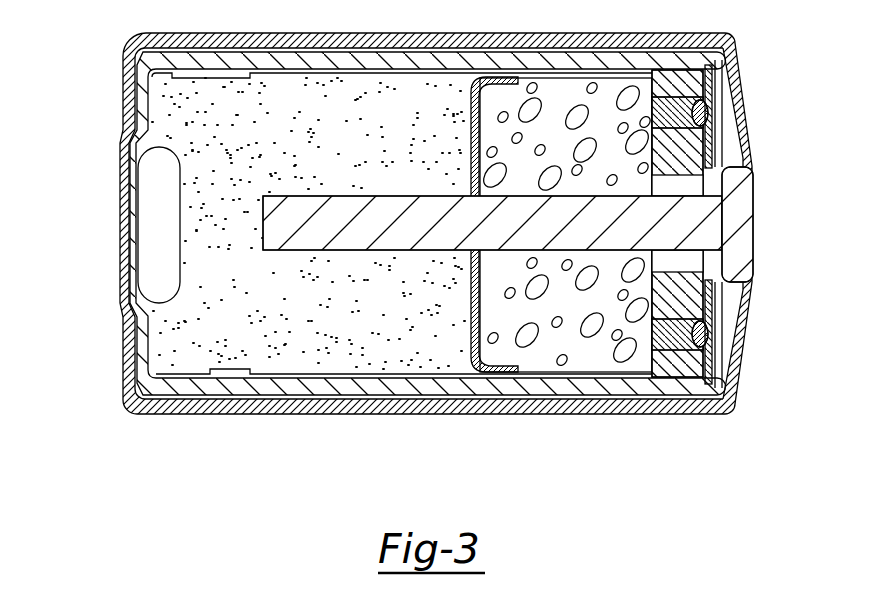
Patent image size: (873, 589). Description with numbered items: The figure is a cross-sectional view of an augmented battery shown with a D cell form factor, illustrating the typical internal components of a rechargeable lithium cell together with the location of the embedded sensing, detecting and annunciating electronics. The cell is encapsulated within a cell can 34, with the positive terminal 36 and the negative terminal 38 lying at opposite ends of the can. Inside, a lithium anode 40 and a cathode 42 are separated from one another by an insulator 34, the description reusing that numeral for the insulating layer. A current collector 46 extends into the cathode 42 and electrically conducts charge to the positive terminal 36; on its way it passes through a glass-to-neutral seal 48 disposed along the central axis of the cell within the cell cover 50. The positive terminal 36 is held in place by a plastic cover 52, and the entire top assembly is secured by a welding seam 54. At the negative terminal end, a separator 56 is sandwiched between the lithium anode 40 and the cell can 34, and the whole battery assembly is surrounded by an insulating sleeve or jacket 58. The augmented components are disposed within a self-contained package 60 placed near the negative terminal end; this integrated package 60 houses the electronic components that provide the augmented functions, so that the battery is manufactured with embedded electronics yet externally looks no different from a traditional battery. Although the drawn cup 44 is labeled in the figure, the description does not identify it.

The cell can 34 is at (343, 393).
The positive terminal 36 is at (747, 218).
The negative terminal 38 is at (120, 240).
The lithium anode 40 is at (617, 335).
The cathode 42 is at (372, 345).
The cup 44 is at (487, 352).
The current collector 46 is at (458, 240).
The glass-to-neutral seal 48 is at (680, 268).
The cell cover 50 is at (667, 345).
The plastic cover 52 is at (727, 328).
The welding seam 54 is at (718, 400).
The separator 56 is at (238, 378).
The insulating sleeve or jacket 58 is at (200, 407).
The self-contained package 60 is at (148, 200).